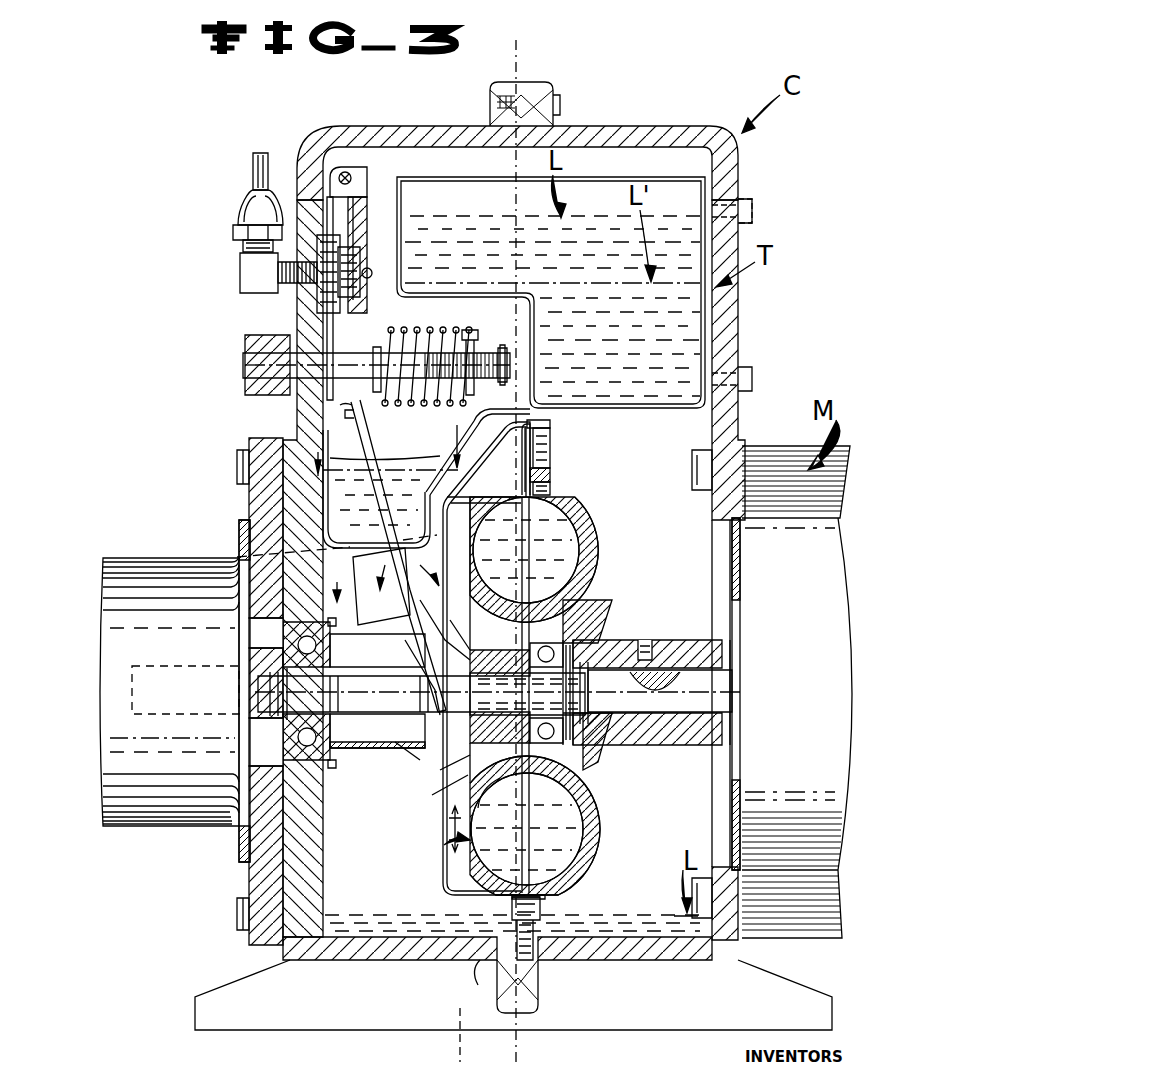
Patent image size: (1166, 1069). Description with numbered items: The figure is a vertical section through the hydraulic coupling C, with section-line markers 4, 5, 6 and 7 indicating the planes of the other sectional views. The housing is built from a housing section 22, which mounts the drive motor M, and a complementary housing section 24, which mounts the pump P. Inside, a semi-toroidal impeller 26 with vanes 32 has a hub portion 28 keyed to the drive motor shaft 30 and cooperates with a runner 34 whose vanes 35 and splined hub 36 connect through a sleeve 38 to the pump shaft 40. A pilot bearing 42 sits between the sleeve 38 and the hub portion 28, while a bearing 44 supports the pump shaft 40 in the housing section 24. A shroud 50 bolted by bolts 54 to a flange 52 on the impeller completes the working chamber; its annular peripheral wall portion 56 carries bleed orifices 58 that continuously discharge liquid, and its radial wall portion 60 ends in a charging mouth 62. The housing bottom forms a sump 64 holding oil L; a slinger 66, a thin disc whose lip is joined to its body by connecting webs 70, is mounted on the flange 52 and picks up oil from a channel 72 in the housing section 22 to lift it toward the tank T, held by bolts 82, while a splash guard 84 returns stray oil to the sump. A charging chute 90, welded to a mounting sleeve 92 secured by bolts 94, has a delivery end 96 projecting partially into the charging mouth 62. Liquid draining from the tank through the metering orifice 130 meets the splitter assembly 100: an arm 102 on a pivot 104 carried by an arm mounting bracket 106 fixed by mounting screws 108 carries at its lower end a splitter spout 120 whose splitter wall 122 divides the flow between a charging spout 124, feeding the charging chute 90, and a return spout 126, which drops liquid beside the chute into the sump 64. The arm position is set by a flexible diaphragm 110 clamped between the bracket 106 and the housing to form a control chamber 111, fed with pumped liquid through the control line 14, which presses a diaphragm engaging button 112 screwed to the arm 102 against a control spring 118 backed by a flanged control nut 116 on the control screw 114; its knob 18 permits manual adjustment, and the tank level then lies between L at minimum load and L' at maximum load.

The section line 4- 4 is at (568, 47).
The section line 5- 5 is at (460, 1046).
The section line 6- 6 is at (387, 450).
The section line 7- 7 is at (338, 568).
The control line 14 is at (252, 173).
The control knob 18 is at (246, 353).
The housing section 22 is at (616, 132).
The housing section 24 is at (438, 128).
The impeller 26 is at (592, 513).
The hub portion 28 is at (680, 640).
The drive motor shaft 30 is at (722, 690).
The vanes or blades 32 is at (578, 575).
The runner 34 is at (440, 848).
The vanes or blades 35 is at (510, 600).
The splined hub 36 is at (430, 794).
The sleeve 38 is at (500, 794).
The pump shaft 40 is at (529, 693).
The pilot bearing 42 is at (570, 635).
The bearing 44 is at (290, 642).
The shroud 50 is at (465, 492).
The flange 52 is at (552, 475).
The bolts 54 is at (552, 485).
The annular peripheral wall portion 56 is at (460, 890).
The bleed or discharge orifices 58 is at (492, 905).
The radial wall portion 60 is at (448, 822).
The charging mouth 62 is at (431, 775).
The sump 64 is at (635, 940).
The slinger 66 is at (560, 425).
The connecting webs 70 is at (548, 428).
The return channel 72 is at (545, 965).
The bolts 82 is at (752, 210).
The splash guard 84 is at (480, 445).
The charging chute 90 is at (400, 720).
The charging chute mounting sleeve 92 is at (340, 762).
The bolts 94 is at (328, 618).
The delivery end 96 is at (409, 759).
The splitter assembly 100 is at (470, 596).
The splitter arm 102 is at (378, 438).
The pivot 104 is at (350, 175).
The arm mounting bracket 106 is at (370, 200).
The mounting screws 108 is at (290, 240).
The flexible diaphragm 110 is at (355, 300).
The control chamber 111 is at (320, 290).
The diaphragm engaging button 112 is at (372, 275).
The control screw 114 is at (508, 375).
The flanged control nut 116 is at (472, 345).
The control spring 118 is at (408, 335).
The splitter spout 120 is at (364, 694).
The splitter wall 122 is at (415, 640).
The charging spout 124 is at (420, 605).
The bypass or return spout 126 is at (381, 586).
The metering orifice 130 is at (392, 548).